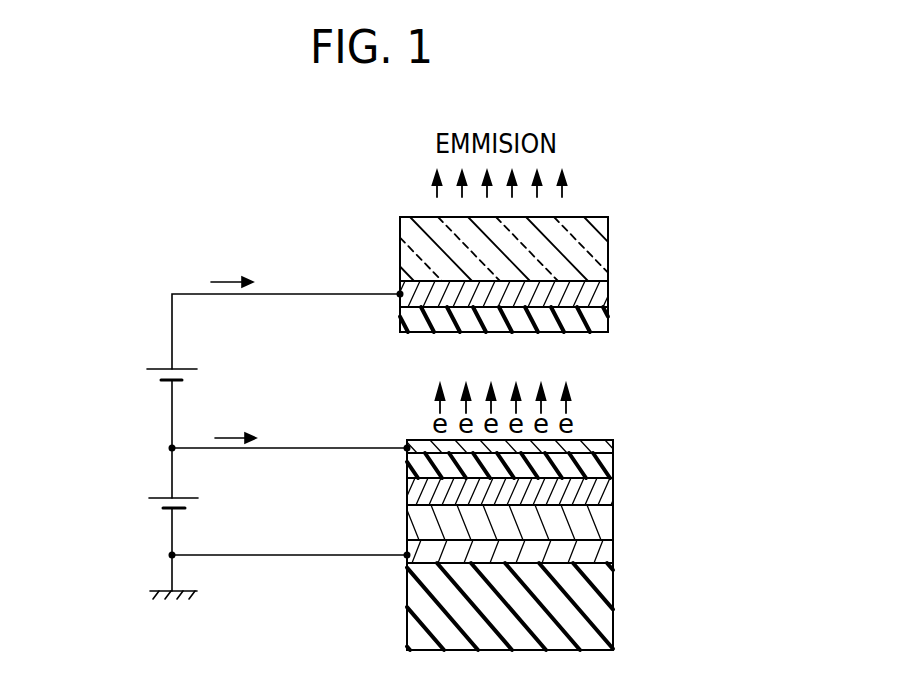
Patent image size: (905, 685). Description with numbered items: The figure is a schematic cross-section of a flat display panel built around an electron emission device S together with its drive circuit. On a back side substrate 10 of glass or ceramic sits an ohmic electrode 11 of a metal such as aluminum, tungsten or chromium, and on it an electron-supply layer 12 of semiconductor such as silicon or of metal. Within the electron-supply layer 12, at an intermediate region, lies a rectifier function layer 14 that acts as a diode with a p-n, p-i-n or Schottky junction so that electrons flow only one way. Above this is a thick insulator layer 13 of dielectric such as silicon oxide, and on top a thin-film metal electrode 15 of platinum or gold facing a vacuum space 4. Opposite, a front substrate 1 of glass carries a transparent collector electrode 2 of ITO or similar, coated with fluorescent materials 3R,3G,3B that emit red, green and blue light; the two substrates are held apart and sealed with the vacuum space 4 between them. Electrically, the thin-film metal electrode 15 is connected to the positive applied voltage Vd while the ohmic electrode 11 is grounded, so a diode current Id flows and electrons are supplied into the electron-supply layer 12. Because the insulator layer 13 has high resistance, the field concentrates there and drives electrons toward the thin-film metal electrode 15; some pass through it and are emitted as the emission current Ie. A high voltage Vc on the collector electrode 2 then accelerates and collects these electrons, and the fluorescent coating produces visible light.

The front substrate 1 is at (588, 258).
The transparent collector electrode 2 is at (593, 290).
The fluorescent materials 3R,3G,3B is at (593, 322).
The vacuum space 4 is at (512, 363).
The electron emission device S is at (645, 428).
The back side substrate 10 is at (420, 628).
The ohmic electrode 11 is at (597, 553).
The electron-supply layer 12 is at (428, 523).
The insulator layer 13 is at (597, 465).
The rectifier function layer 14 is at (597, 494).
The thin-film metal electrode 15 is at (407, 440).
The high voltage Vc is at (151, 376).
The applied voltage Vd is at (152, 504).
The emission current Ie is at (232, 269).
The diode current Id is at (235, 424).